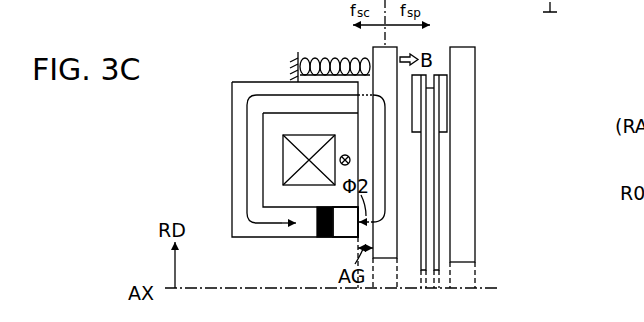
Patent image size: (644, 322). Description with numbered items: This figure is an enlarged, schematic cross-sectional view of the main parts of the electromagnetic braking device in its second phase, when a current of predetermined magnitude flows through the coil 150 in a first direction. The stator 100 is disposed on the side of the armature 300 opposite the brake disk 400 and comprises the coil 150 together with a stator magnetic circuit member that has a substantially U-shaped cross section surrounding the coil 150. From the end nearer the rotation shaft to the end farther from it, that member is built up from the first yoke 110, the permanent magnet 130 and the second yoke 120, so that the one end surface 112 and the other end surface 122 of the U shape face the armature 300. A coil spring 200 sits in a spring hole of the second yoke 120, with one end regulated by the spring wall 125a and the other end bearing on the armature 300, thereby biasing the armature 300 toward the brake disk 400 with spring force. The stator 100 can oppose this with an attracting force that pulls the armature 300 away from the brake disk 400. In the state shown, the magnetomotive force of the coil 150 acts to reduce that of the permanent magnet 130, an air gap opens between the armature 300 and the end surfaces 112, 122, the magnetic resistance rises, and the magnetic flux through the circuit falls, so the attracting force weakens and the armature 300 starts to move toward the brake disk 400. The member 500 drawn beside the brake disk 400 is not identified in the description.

The stator 100 is at (229, 57).
The first yoke 110 is at (343, 238).
The one end surface 112 is at (358, 233).
The second yoke 120 is at (275, 238).
The other end surface 122 is at (358, 100).
The spring wall 125a is at (299, 54).
The permanent magnet 130 is at (320, 238).
The coil 150 is at (293, 160).
The coil spring 200 is at (328, 57).
The armature 300 is at (400, 50).
The brake disk 400 is at (437, 70).
The base member 500 is at (475, 72).